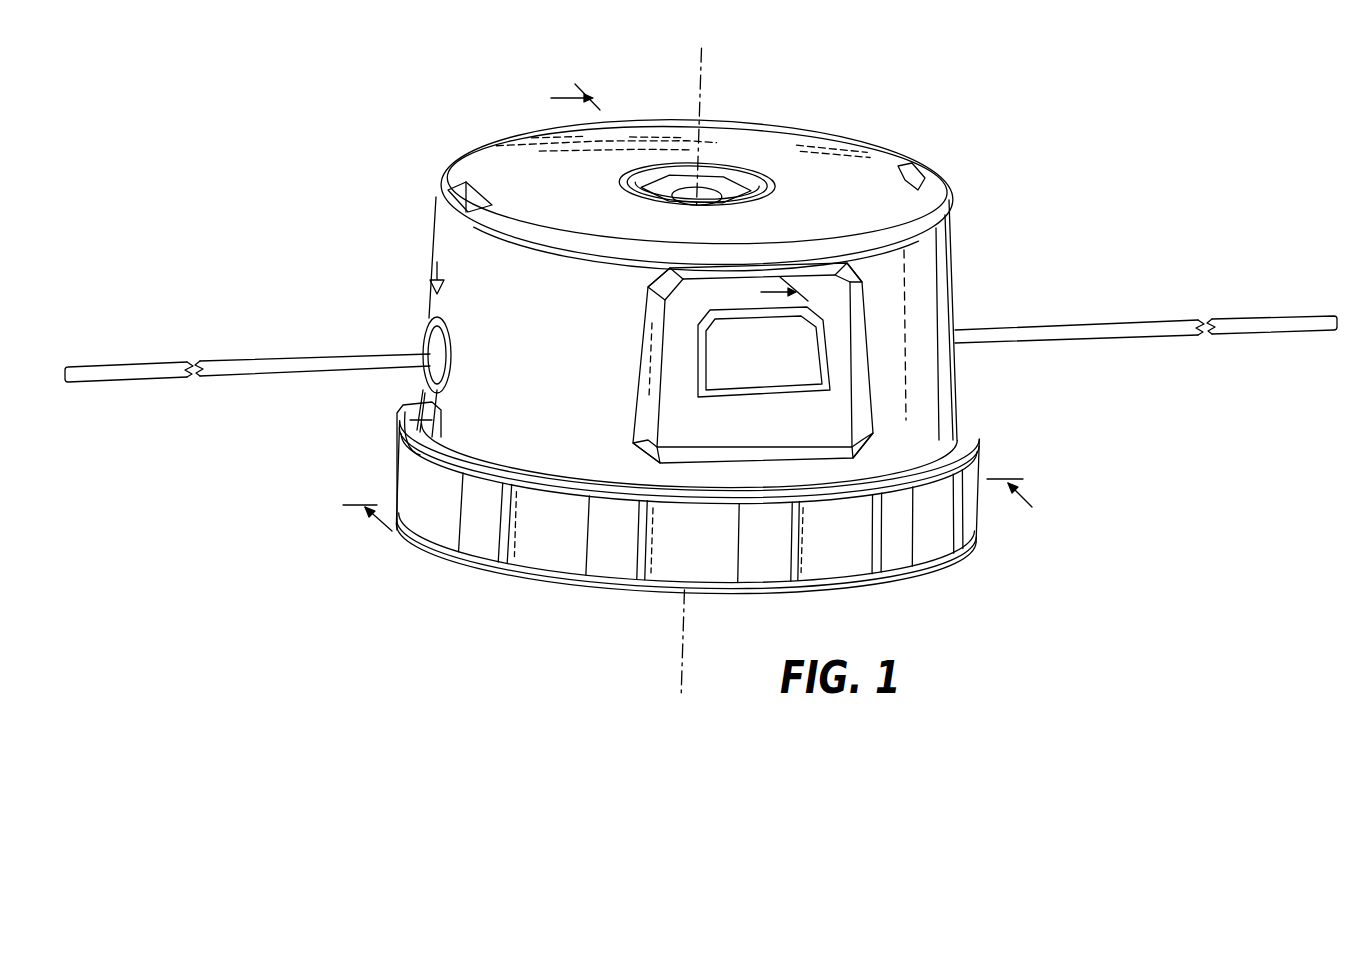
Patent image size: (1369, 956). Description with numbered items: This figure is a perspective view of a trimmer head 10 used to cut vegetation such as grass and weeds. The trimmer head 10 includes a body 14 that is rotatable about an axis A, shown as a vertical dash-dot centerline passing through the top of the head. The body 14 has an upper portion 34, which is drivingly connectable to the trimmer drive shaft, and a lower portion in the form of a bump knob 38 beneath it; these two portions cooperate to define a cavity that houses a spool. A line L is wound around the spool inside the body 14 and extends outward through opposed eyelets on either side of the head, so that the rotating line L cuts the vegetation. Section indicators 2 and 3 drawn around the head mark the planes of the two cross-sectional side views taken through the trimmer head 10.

The trimmer head 10 is at (701, 368).
The body 14 is at (612, 363).
The upper portion 34 is at (674, 188).
The bump knob 38 is at (687, 530).
The cross-sectional side view section line 2 is at (696, 519).
The cross-sectional side view section line 3 is at (670, 193).
The axis A is at (712, 373).
The line L is at (701, 334).